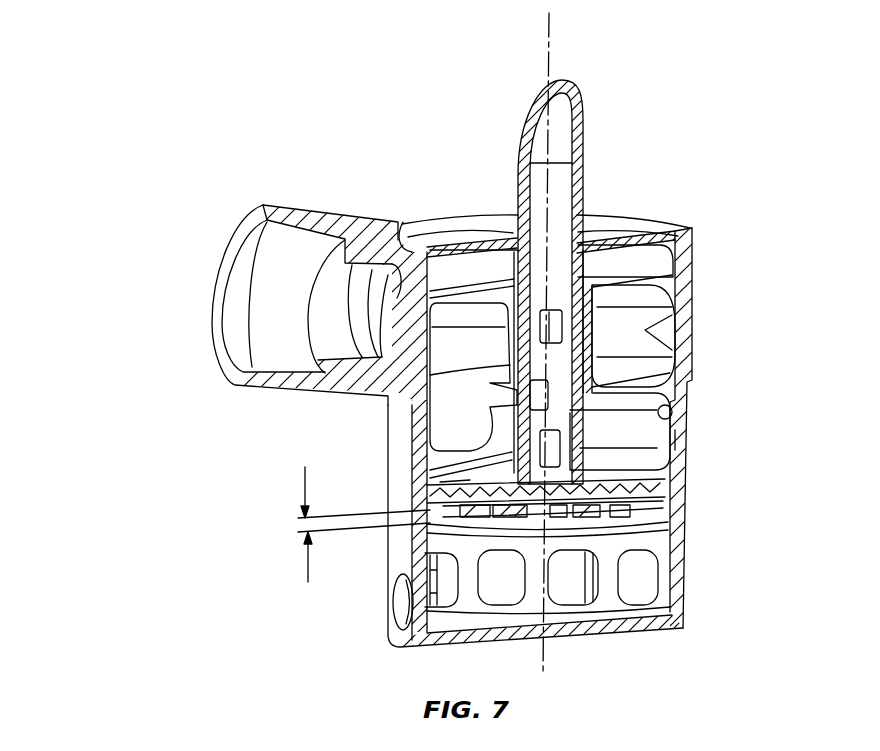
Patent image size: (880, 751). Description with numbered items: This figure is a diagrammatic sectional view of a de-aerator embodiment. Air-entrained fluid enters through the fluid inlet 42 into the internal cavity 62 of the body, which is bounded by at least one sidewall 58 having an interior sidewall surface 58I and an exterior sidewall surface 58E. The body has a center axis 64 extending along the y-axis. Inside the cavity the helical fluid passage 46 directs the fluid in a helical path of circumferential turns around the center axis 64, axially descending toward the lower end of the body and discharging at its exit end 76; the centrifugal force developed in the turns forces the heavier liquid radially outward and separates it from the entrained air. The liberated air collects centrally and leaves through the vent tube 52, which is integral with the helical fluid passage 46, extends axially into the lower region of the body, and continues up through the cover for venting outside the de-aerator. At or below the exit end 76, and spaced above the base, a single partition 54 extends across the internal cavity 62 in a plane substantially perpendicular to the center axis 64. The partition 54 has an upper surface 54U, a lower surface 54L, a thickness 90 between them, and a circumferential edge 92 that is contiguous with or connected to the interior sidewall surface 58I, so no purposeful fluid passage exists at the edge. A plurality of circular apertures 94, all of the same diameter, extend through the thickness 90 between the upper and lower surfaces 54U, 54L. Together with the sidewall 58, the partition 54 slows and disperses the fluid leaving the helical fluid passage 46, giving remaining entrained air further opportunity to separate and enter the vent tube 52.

The fluid inlet 42 is at (214, 296).
The helical fluid passage 46 is at (658, 325).
The vent tube 52 is at (584, 180).
The partition 54 is at (660, 503).
The upper surface 54U is at (470, 498).
The lower surface 54L is at (415, 545).
The sidewall 58 is at (659, 361).
The interior sidewall surface 58I is at (672, 408).
The exterior sidewall surface 58E is at (688, 440).
The internal cavity 62 is at (472, 357).
The center axis 64 is at (549, 22).
The exit end 76 is at (444, 484).
The thickness 90 is at (306, 560).
The circumferential edge 92 is at (688, 524).
The apertures 94 is at (512, 498).